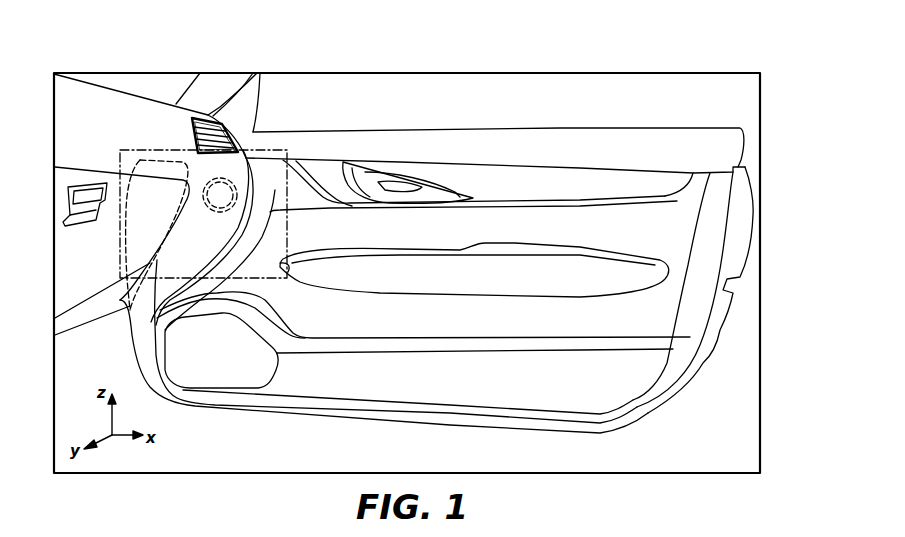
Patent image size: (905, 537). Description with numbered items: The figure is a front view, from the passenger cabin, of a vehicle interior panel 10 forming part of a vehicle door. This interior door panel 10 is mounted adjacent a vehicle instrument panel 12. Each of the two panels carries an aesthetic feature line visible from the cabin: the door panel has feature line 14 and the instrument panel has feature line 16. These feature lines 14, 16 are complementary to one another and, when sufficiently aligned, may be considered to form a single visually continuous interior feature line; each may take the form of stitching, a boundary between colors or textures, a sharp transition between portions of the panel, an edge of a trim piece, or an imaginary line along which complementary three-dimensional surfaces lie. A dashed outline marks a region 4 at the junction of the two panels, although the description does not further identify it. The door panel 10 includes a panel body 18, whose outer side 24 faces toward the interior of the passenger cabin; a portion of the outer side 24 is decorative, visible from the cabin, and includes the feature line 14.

The vehicle interior panel 10 is at (658, 54).
The vehicle instrument panel 12 is at (156, 89).
The aesthetic feature line 14 is at (322, 159).
The aesthetic feature line 16 is at (194, 149).
The panel body 18 is at (488, 142).
The side impact region 4 is at (262, 150).
The outer side 24 is at (638, 383).